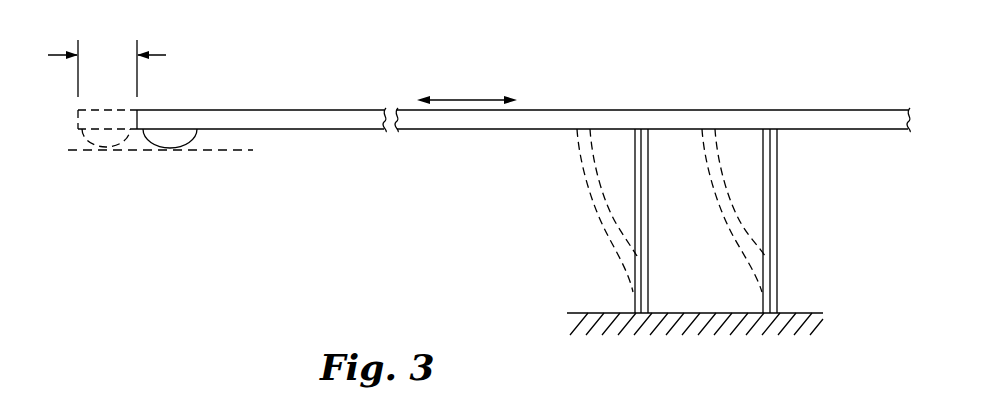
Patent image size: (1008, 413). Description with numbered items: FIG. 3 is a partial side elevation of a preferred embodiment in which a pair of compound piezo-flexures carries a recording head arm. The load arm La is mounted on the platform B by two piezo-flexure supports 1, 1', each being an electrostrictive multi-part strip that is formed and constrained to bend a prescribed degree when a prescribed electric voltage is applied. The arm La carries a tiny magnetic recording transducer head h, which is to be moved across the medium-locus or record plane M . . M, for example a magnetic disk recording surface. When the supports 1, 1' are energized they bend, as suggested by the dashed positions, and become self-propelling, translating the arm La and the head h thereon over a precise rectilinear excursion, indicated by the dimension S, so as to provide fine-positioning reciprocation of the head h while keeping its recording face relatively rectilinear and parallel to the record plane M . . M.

The load arm La is at (605, 110).
The spacing dimension S is at (107, 56).
The transducer head h is at (172, 148).
The medium-locus M is at (157, 153).
The piezo-flexure support 1 is at (557, 221).
The piezo-flexure support 1' is at (800, 221).
The platform B is at (813, 313).